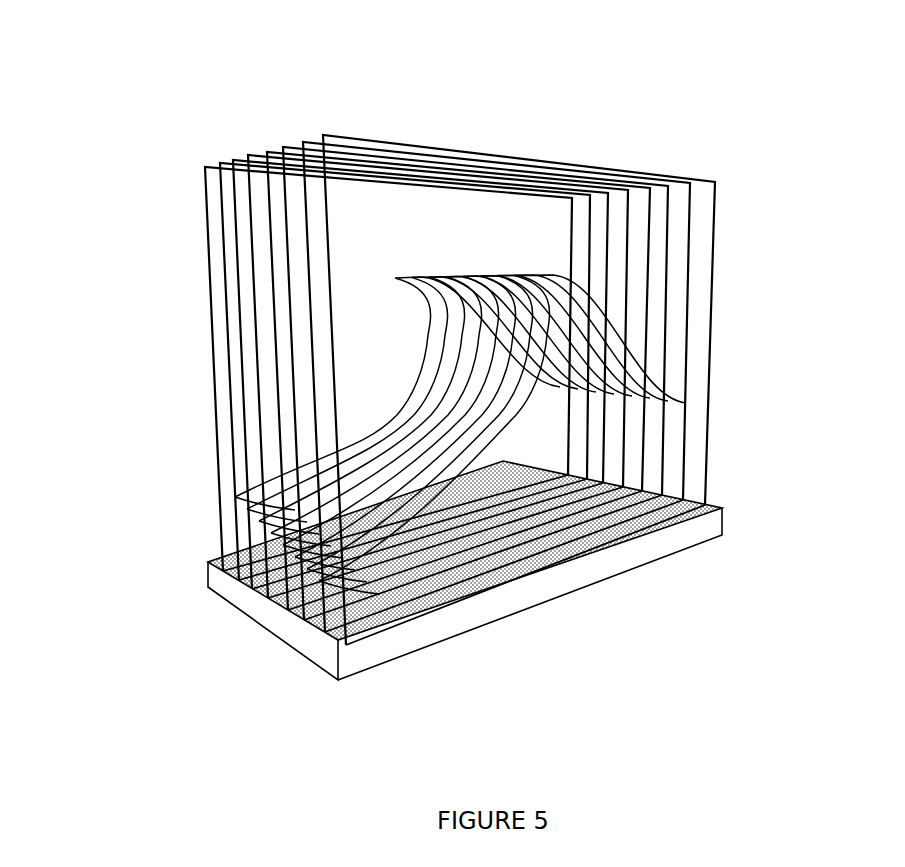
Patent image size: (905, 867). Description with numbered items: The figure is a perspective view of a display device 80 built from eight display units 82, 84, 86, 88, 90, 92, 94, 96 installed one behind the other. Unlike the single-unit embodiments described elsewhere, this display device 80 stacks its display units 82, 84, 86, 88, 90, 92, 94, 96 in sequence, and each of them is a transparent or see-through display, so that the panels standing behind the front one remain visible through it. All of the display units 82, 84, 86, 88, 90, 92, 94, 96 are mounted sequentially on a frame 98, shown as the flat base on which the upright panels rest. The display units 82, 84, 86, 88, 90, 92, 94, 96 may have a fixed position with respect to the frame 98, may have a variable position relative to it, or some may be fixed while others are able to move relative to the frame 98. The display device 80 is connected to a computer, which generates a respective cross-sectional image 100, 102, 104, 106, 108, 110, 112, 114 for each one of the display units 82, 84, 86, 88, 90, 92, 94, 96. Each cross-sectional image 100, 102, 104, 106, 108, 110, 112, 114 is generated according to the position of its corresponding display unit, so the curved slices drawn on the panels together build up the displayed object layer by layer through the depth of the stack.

The display device 80 is at (730, 87).
The display unit 82 is at (330, 347).
The display unit 84 is at (307, 322).
The display unit 86 is at (290, 304).
The display unit 88 is at (272, 282).
The display unit 90 is at (254, 261).
The display unit 92 is at (238, 240).
The display unit 94 is at (222, 226).
The display unit 96 is at (207, 208).
The frame 98 is at (570, 568).
The cross-sectional image 100 is at (520, 467).
The cross-sectional image 102 is at (500, 457).
The cross-sectional image 104 is at (490, 437).
The cross-sectional image 106 is at (480, 423).
The cross-sectional image 108 is at (470, 408).
The cross-sectional image 110 is at (458, 390).
The cross-sectional image 112 is at (443, 373).
The cross-sectional image 114 is at (423, 360).